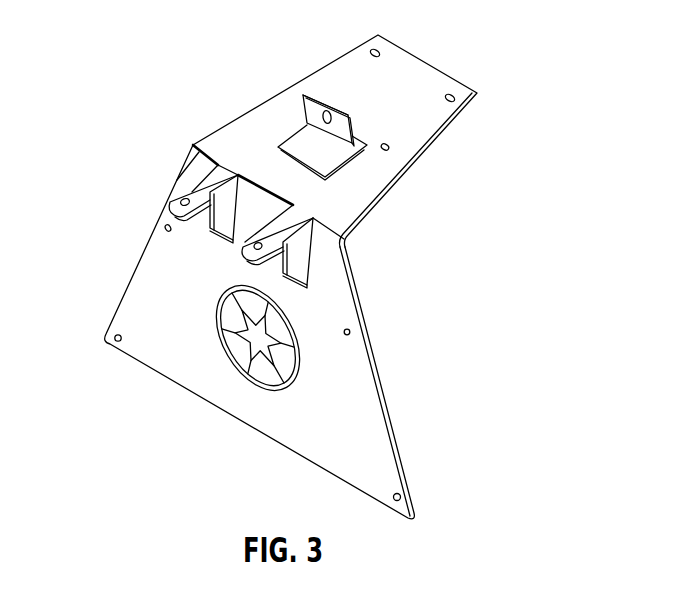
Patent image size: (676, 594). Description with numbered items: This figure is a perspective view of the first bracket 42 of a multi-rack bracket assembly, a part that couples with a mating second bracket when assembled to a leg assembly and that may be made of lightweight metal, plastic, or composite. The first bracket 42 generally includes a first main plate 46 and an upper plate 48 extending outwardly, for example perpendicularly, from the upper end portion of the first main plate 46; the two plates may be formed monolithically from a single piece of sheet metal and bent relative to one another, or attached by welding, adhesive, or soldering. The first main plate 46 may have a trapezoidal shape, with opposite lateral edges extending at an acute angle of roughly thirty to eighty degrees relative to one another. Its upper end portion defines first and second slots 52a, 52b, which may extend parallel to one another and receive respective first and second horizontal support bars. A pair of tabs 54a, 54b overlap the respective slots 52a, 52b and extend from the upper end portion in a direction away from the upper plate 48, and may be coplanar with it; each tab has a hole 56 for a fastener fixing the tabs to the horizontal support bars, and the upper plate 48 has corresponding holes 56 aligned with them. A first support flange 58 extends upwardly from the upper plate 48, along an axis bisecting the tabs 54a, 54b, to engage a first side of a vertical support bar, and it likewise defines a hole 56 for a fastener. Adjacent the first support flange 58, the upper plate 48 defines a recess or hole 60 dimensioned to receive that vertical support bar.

The first bracket 42 is at (180, 76).
The first main plate 46 is at (121, 294).
The upper plate 48 is at (390, 205).
The first slot 52a is at (224, 225).
The second slot 52b is at (337, 283).
The first tab 54a is at (192, 192).
The second tab 54b is at (300, 267).
The hole 56 is at (328, 112).
The first support flange 58 is at (392, 152).
The hole 60 is at (288, 142).